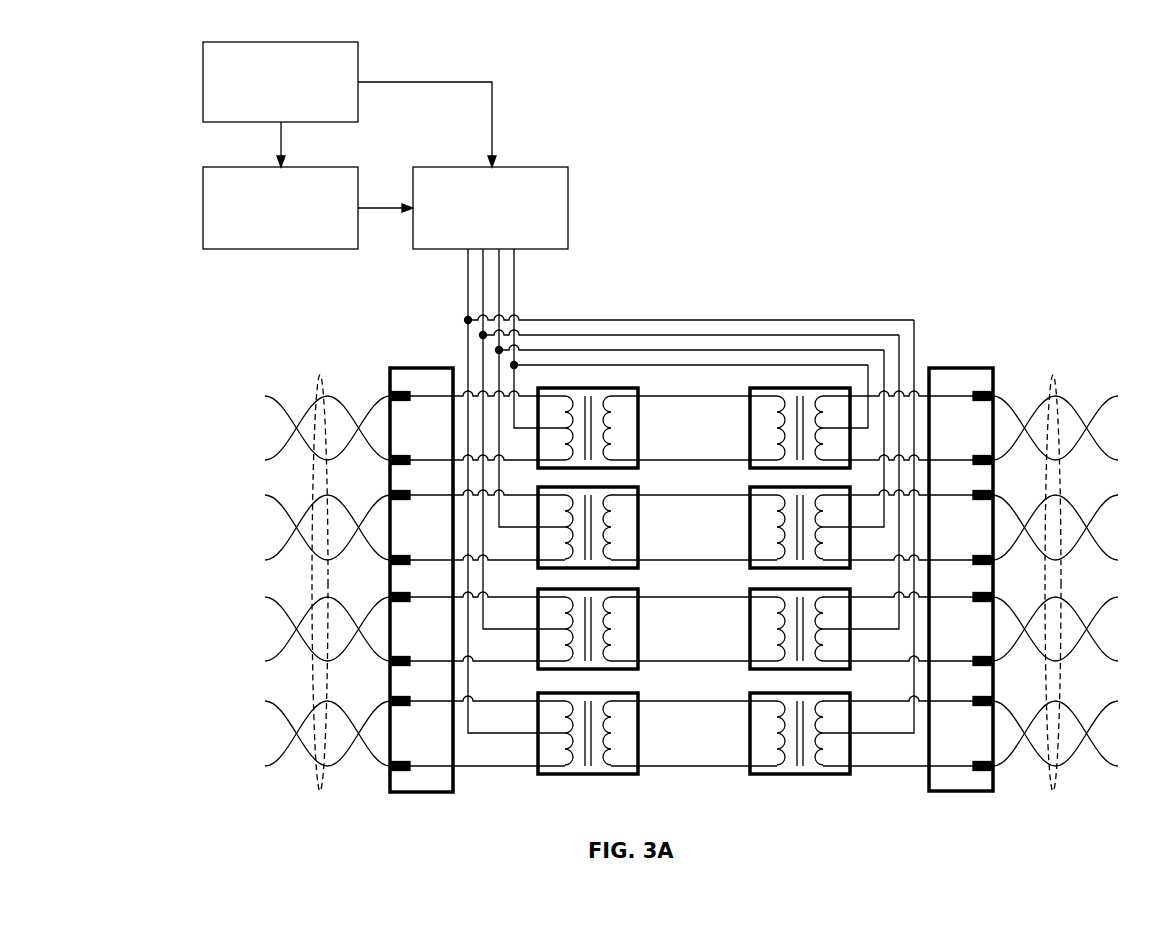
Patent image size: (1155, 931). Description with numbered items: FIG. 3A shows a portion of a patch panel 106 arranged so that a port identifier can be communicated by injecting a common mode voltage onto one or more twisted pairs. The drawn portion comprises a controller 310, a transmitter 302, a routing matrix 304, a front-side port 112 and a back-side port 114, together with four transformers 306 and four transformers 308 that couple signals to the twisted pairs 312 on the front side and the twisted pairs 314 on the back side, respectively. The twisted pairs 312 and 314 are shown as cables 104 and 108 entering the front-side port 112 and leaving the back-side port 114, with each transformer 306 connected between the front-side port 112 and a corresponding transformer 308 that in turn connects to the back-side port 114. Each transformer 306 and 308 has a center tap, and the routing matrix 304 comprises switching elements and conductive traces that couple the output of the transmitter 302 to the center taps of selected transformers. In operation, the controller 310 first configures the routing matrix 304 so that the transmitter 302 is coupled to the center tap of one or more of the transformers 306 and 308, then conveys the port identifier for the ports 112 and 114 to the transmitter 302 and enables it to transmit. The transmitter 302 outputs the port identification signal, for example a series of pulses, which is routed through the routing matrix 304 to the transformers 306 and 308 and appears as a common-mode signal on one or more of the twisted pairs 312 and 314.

The patch panel 106 is at (125, 82).
The controller 310 is at (267, 101).
The transmitter 302 is at (267, 228).
The routing matrix 304 is at (477, 228).
The transformers 306 is at (638, 388).
The transformers 308 is at (750, 388).
The front-side port 112 is at (419, 792).
The back-side port 114 is at (960, 791).
The twisted pairs 312 is at (315, 581).
The twisted pairs 314 is at (1065, 581).
The first cable 104 is at (318, 378).
The second cable 108 is at (1051, 378).